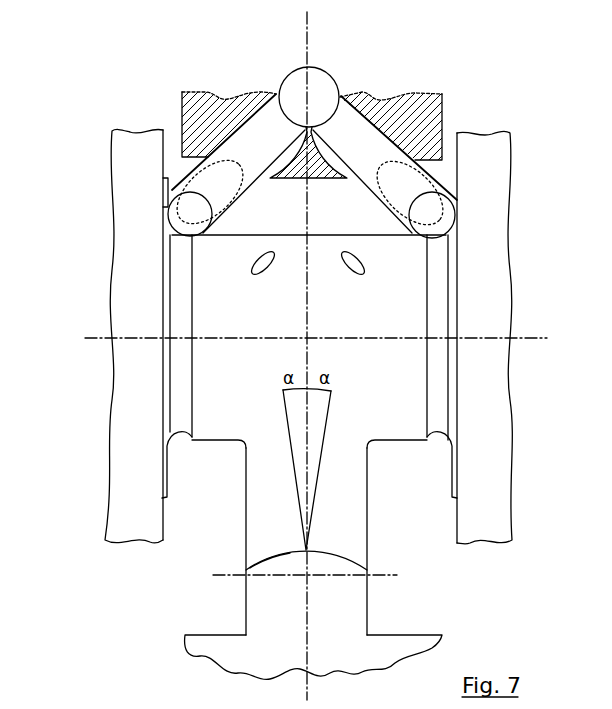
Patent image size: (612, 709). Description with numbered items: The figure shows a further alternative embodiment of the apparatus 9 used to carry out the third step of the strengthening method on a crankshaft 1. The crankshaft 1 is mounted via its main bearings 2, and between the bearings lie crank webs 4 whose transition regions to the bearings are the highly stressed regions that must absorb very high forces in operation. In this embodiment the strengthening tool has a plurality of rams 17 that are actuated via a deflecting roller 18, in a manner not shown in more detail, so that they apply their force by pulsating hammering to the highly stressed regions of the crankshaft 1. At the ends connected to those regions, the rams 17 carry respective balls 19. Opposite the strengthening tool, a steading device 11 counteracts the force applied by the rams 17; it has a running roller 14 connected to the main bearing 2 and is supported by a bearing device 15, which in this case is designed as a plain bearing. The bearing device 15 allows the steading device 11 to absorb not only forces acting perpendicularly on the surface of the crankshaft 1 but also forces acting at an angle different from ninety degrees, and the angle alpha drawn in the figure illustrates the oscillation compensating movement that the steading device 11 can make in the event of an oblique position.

The crankshaft 1 is at (270, 336).
The main bearing 2 is at (212, 413).
The crank web 4 is at (141, 500).
The apparatus 9 is at (390, 82).
The steading device 11 is at (354, 518).
The running roller 14 is at (275, 530).
The bearing device 15 is at (273, 557).
The ram 17 is at (217, 147).
The deflecting roller 18 is at (320, 77).
The ball 19 is at (175, 210).